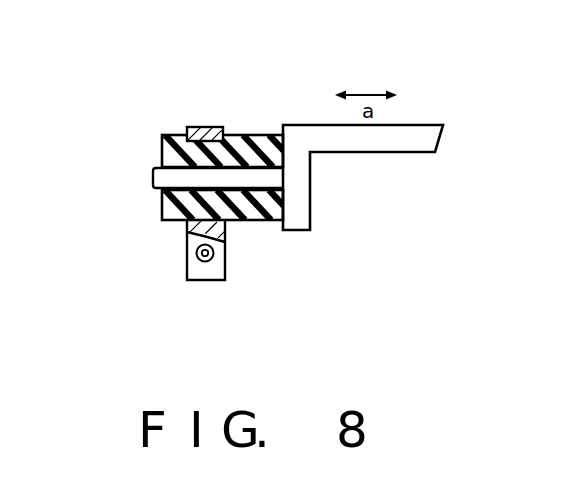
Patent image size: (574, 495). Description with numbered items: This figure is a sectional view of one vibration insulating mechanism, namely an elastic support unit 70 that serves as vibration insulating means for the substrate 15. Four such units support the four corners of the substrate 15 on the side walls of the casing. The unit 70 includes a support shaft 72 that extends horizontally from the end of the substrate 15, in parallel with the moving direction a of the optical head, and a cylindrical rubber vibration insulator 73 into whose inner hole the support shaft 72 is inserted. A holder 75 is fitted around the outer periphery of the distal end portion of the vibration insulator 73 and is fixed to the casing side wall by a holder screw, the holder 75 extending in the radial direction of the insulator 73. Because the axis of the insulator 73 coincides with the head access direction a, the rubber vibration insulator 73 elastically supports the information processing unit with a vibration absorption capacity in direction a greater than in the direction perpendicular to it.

The substrate 15 is at (377, 148).
The elastic support unit 70 is at (145, 149).
The support shaft 72 is at (165, 173).
The rubber vibration insulator 73 is at (245, 142).
The holder 75 is at (202, 127).